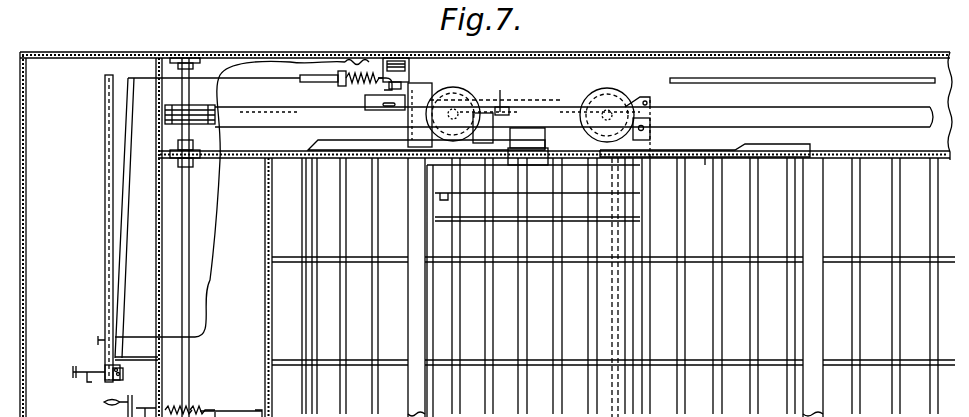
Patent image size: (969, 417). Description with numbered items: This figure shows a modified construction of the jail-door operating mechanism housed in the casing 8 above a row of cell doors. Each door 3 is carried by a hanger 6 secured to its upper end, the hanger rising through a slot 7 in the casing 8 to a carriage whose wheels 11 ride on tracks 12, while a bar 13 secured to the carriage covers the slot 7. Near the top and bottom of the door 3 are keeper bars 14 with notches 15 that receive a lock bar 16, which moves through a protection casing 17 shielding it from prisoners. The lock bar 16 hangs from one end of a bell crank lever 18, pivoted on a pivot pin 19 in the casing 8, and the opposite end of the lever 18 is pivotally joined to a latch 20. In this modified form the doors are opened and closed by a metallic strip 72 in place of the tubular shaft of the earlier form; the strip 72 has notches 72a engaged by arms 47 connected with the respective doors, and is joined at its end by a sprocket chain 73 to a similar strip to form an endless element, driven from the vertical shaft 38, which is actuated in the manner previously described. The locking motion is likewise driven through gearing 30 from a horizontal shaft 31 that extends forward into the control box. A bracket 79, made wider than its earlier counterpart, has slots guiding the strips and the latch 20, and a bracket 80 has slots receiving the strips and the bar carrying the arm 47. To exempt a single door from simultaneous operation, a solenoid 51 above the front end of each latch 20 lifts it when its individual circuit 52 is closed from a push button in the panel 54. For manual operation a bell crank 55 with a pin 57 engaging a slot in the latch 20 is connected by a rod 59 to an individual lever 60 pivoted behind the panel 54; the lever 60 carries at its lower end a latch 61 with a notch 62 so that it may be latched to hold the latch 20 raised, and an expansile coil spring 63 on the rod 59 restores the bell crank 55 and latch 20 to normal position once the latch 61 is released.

The casing 8 is at (859, 58).
The door 3 is at (422, 326).
The hanger 6 is at (528, 146).
The slot 7 is at (707, 160).
The wheel 11 is at (606, 96).
The track 12 is at (812, 147).
The bar 13 is at (712, 148).
The bar 14 is at (512, 210).
The notch 15 is at (449, 193).
The lock bar 16 is at (610, 304).
The protection casing 17 is at (608, 343).
The bell crank lever 18 is at (650, 100).
The pivot pin 19 is at (650, 133).
The latch 20 is at (562, 98).
The gearing 30 is at (195, 410).
The horizontal shaft 31 is at (226, 416).
The vertical shaft 38 is at (190, 357).
The arm 47 is at (500, 100).
The solenoid 51 is at (391, 64).
The circuit 52 is at (209, 270).
The panel 54 is at (107, 263).
The bell crank 55 is at (372, 90).
The pin 57 is at (393, 108).
The rod 59 is at (790, 82).
The lever 60 is at (121, 280).
The latch 61 is at (72, 375).
The notch 62 is at (88, 384).
The expansile coil spring 63 is at (338, 75).
The metallic strip 72 is at (795, 127).
The notch 72a is at (508, 110).
The sprocket chain 73 is at (199, 116).
The bracket 79 is at (418, 96).
The bracket 80 is at (470, 100).